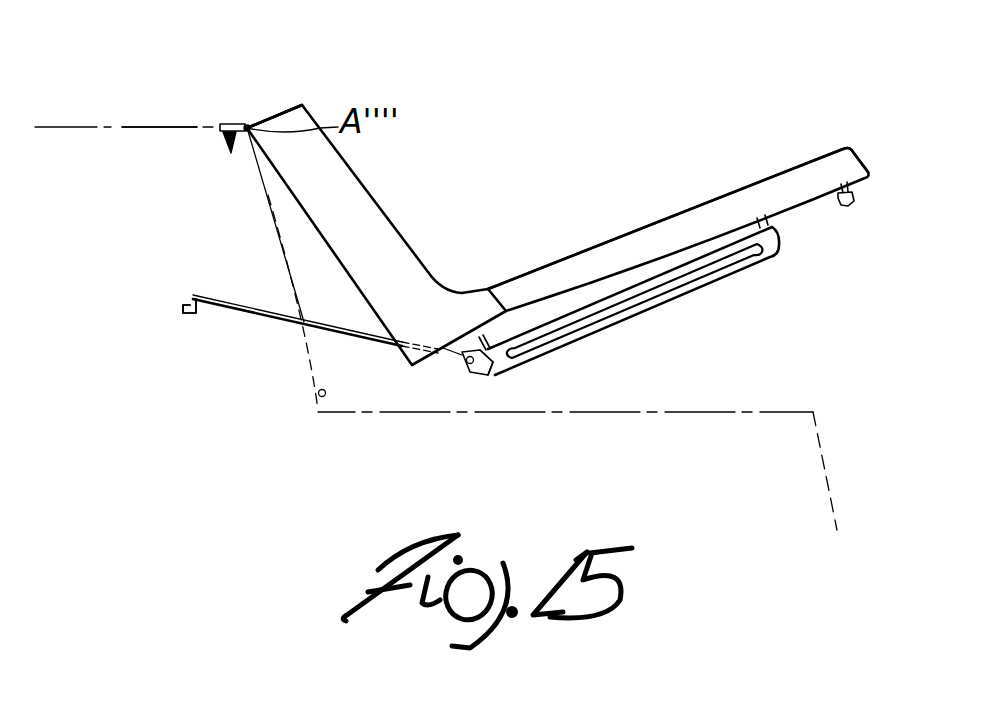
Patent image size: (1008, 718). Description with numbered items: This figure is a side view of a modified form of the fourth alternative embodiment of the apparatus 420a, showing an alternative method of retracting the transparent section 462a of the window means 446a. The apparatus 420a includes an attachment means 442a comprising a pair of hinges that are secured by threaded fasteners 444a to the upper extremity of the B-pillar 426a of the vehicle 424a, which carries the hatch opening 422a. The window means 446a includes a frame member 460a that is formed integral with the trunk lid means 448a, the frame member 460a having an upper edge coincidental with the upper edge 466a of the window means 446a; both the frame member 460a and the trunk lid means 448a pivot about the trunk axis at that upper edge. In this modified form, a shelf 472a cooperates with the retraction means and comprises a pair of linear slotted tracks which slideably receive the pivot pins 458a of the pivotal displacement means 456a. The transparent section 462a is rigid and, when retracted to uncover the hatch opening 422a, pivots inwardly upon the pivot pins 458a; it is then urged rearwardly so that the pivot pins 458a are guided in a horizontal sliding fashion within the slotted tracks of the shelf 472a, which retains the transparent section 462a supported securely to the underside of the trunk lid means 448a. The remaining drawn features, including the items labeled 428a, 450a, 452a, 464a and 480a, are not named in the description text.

The apparatus 420a is at (513, 170).
The hatch opening 422a is at (318, 410).
The vehicle 424a is at (72, 125).
The B-pillar 426a is at (160, 153).
The frame reference line 428a is at (650, 412).
The attachment means 442a is at (226, 110).
The threaded fasteners 444a is at (229, 144).
The window means 446a is at (213, 312).
The trunk lid means 448a is at (586, 257).
The panel edge 450a is at (753, 186).
The bracket top edge 452a is at (285, 107).
The pivotal displacement means 456a is at (493, 373).
The pivot pins 458a is at (472, 364).
The frame member 460a is at (293, 192).
The transparent section 462a is at (283, 320).
The bracket arm 464a is at (387, 207).
The upper edge 466a is at (248, 126).
The shelf 472a is at (668, 298).
The fastener 480a is at (846, 207).